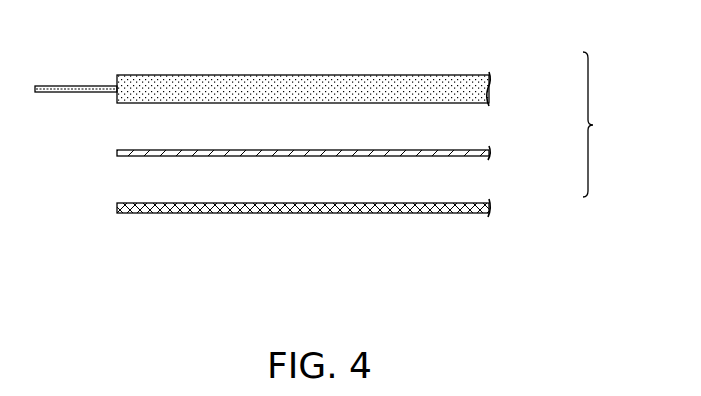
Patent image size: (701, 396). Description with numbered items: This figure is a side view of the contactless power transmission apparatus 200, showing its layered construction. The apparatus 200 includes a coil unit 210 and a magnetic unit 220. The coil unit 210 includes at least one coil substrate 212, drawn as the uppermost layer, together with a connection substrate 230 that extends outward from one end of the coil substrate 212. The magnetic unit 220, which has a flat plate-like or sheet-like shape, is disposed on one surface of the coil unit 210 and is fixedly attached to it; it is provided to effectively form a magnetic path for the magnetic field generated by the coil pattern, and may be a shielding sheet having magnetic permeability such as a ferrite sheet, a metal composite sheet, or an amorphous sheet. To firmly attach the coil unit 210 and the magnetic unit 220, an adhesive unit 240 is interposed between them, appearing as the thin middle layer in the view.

The contactless power transmission apparatus 200 is at (611, 124).
The coil unit 210 is at (466, 71).
The coil substrate 212 is at (163, 81).
The magnetic unit 220 is at (466, 199).
The connection substrate 230 is at (78, 86).
The adhesive unit 240 is at (466, 146).